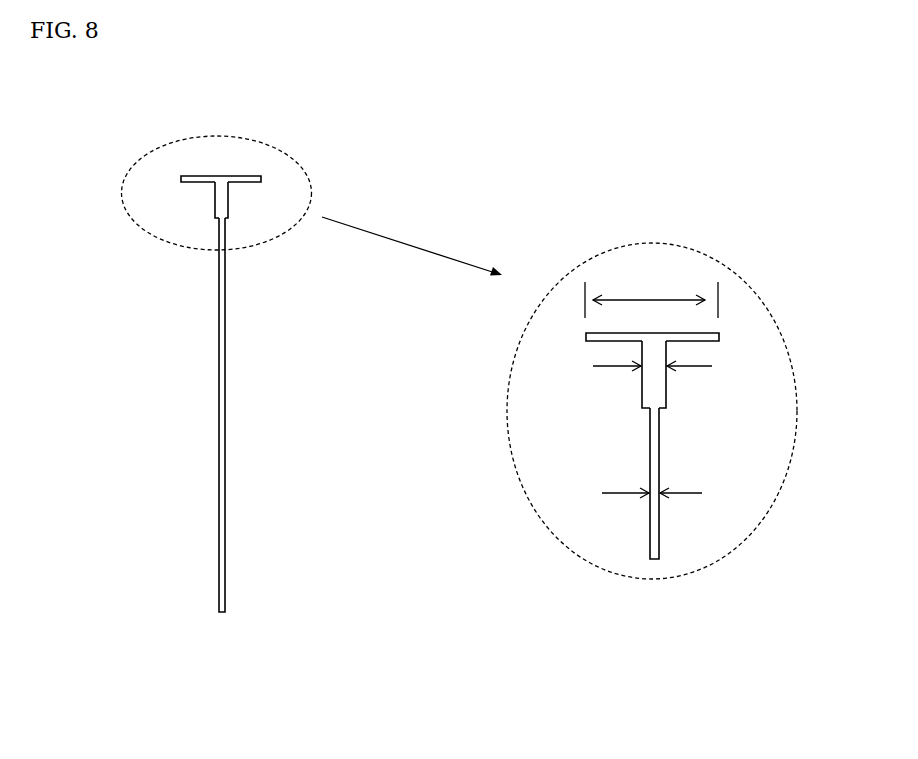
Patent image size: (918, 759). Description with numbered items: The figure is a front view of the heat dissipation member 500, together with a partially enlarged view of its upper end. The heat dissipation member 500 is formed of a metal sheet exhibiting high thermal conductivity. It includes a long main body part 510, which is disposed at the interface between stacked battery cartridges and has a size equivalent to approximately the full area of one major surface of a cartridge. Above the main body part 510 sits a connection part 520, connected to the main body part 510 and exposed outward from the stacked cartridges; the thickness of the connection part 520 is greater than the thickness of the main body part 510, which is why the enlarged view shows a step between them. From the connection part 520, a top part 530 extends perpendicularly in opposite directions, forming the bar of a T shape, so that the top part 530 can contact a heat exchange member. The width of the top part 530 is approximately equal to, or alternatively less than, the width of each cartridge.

The heat dissipation member 500 is at (69, 101).
The main body part 510 is at (222, 357).
The connection part 520 is at (215, 199).
The top part 530 is at (207, 176).